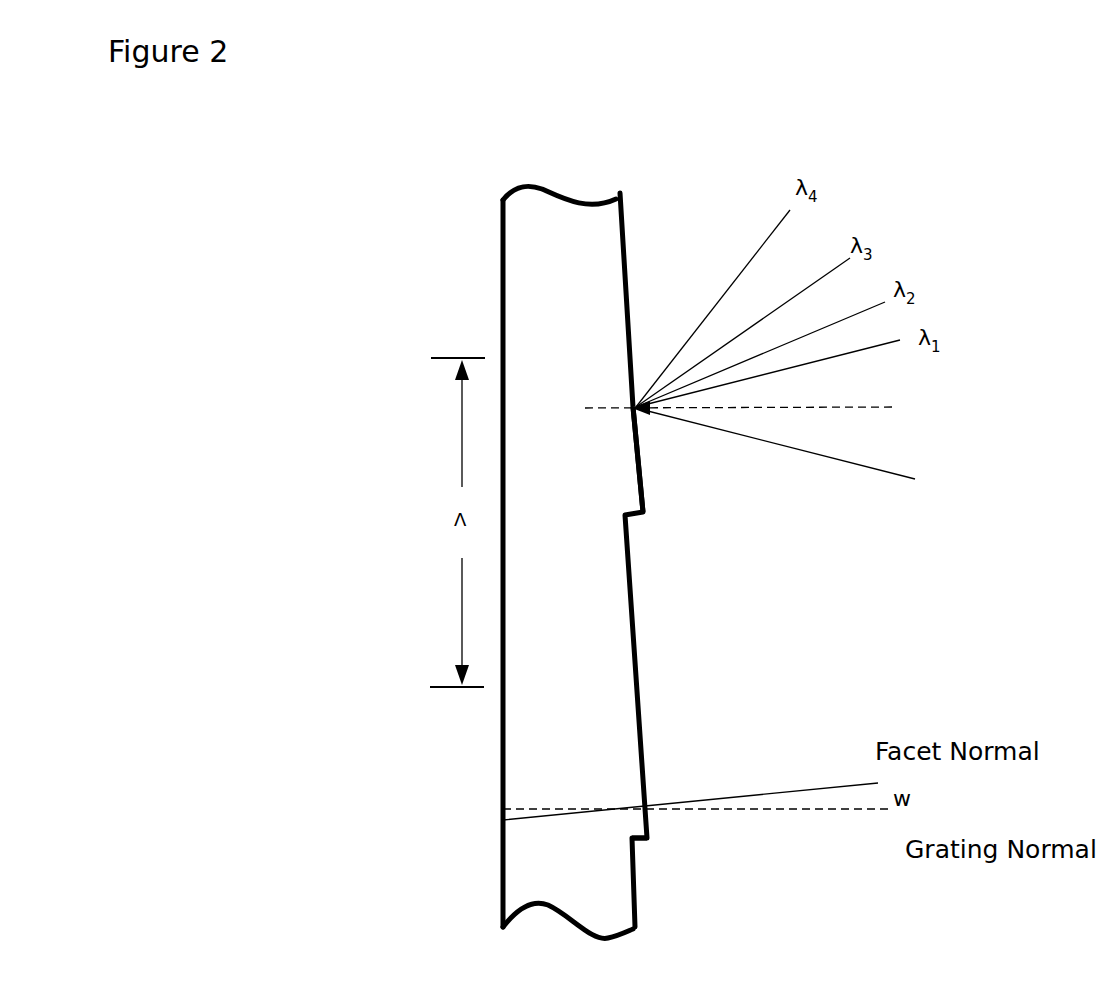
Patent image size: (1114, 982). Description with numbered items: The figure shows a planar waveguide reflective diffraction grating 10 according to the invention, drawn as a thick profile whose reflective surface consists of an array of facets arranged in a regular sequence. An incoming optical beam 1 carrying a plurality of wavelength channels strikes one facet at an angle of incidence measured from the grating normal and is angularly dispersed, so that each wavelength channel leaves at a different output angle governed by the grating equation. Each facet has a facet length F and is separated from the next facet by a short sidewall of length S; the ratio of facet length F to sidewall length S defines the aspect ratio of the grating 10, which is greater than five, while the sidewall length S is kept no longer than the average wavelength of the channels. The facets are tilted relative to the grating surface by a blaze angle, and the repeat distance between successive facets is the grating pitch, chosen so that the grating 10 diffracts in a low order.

The diffraction grating 10 is at (520, 253).
The optical beam 1 is at (860, 468).
The facet length F is at (633, 615).
The sidewall length S is at (640, 840).